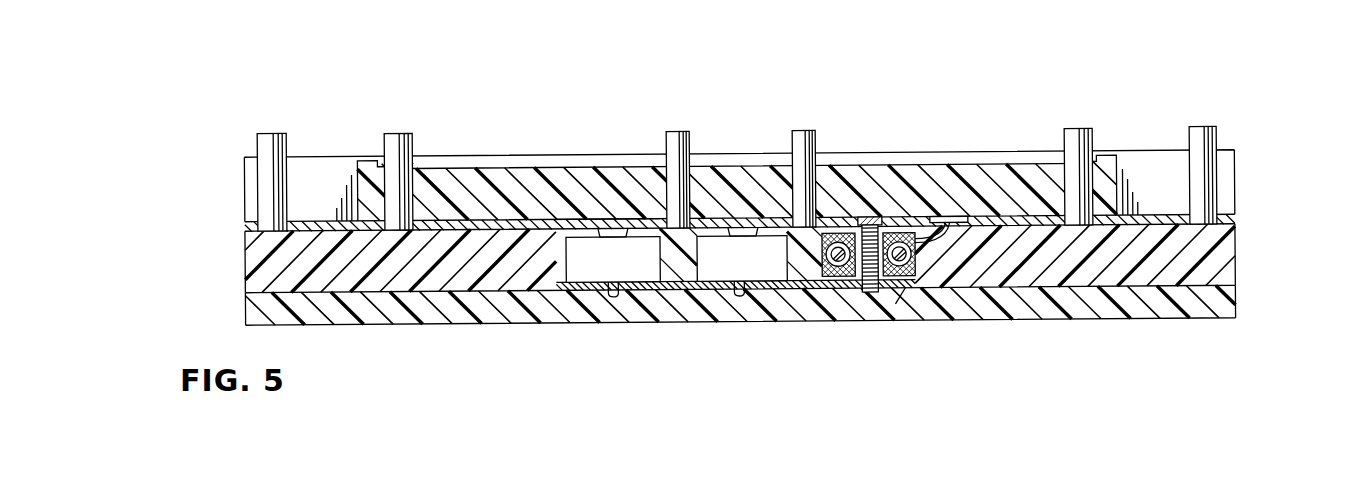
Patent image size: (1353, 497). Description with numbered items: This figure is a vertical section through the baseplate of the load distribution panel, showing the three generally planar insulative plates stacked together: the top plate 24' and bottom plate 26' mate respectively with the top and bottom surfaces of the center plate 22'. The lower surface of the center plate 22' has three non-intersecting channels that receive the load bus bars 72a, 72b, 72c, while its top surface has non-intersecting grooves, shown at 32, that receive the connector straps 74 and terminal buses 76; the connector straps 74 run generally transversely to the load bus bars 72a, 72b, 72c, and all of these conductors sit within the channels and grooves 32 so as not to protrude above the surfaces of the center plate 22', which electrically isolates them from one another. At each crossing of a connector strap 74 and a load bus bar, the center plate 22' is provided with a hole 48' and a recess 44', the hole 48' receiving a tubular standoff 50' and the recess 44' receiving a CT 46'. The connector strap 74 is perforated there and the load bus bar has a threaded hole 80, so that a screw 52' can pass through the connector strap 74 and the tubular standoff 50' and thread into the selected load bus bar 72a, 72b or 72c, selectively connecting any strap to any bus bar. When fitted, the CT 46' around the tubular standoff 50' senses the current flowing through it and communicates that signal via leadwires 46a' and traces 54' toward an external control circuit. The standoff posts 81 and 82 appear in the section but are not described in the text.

The top plate 24' is at (771, 165).
The center plate 22' is at (785, 258).
The bottom plate 26' is at (771, 325).
The terminal bus 76 is at (245, 223).
The standoff 81 is at (268, 128).
The standoff 82 is at (807, 130).
The groove 32 is at (574, 221).
The connector strap 74 is at (715, 220).
The screw 52' is at (864, 157).
The hole 48' is at (926, 133).
The leadwire 46a' is at (953, 169).
The trace 54' is at (997, 138).
The recess 44' is at (667, 322).
The load bus bar 72a is at (857, 288).
The load bus bar 72b is at (723, 287).
The load bus bar 72c is at (633, 286).
The threaded hole 80 is at (890, 298).
The tubular standoff 50' is at (772, 335).
The CT 46' is at (982, 324).